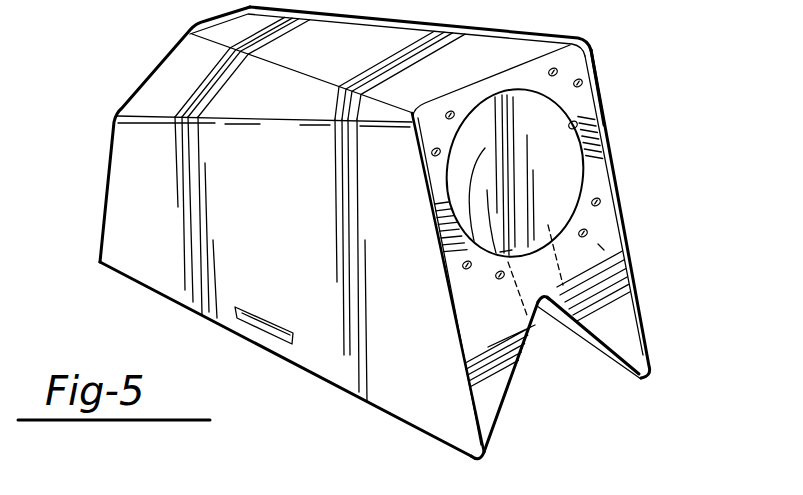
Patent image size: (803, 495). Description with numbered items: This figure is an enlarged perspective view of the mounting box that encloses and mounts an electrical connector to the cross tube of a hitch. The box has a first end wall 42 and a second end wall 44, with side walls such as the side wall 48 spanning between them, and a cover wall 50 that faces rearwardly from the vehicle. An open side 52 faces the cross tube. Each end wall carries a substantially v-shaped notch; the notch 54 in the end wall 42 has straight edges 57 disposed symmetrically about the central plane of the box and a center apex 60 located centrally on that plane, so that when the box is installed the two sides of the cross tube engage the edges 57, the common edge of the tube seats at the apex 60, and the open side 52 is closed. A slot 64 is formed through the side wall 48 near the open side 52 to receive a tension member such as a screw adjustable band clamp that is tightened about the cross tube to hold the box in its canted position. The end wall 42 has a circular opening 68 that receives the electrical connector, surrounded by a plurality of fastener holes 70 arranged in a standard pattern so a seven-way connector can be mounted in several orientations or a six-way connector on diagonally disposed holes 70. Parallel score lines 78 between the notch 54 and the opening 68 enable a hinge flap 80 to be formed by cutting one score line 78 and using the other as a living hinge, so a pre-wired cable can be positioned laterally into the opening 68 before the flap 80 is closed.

The first end wall 42 is at (622, 233).
The second end wall 44 is at (107, 185).
The side wall 48 is at (382, 373).
The cover wall 50 is at (493, 60).
The open side 52 is at (603, 338).
The notch 54 is at (497, 446).
The straight edges 57 is at (613, 362).
The center apex 60 is at (553, 312).
The slot 64 is at (285, 348).
The circular opening 68 is at (600, 107).
The fastener holes 70 is at (573, 90).
The score lines 78 is at (516, 248).
The hinge flap 80 is at (598, 244).